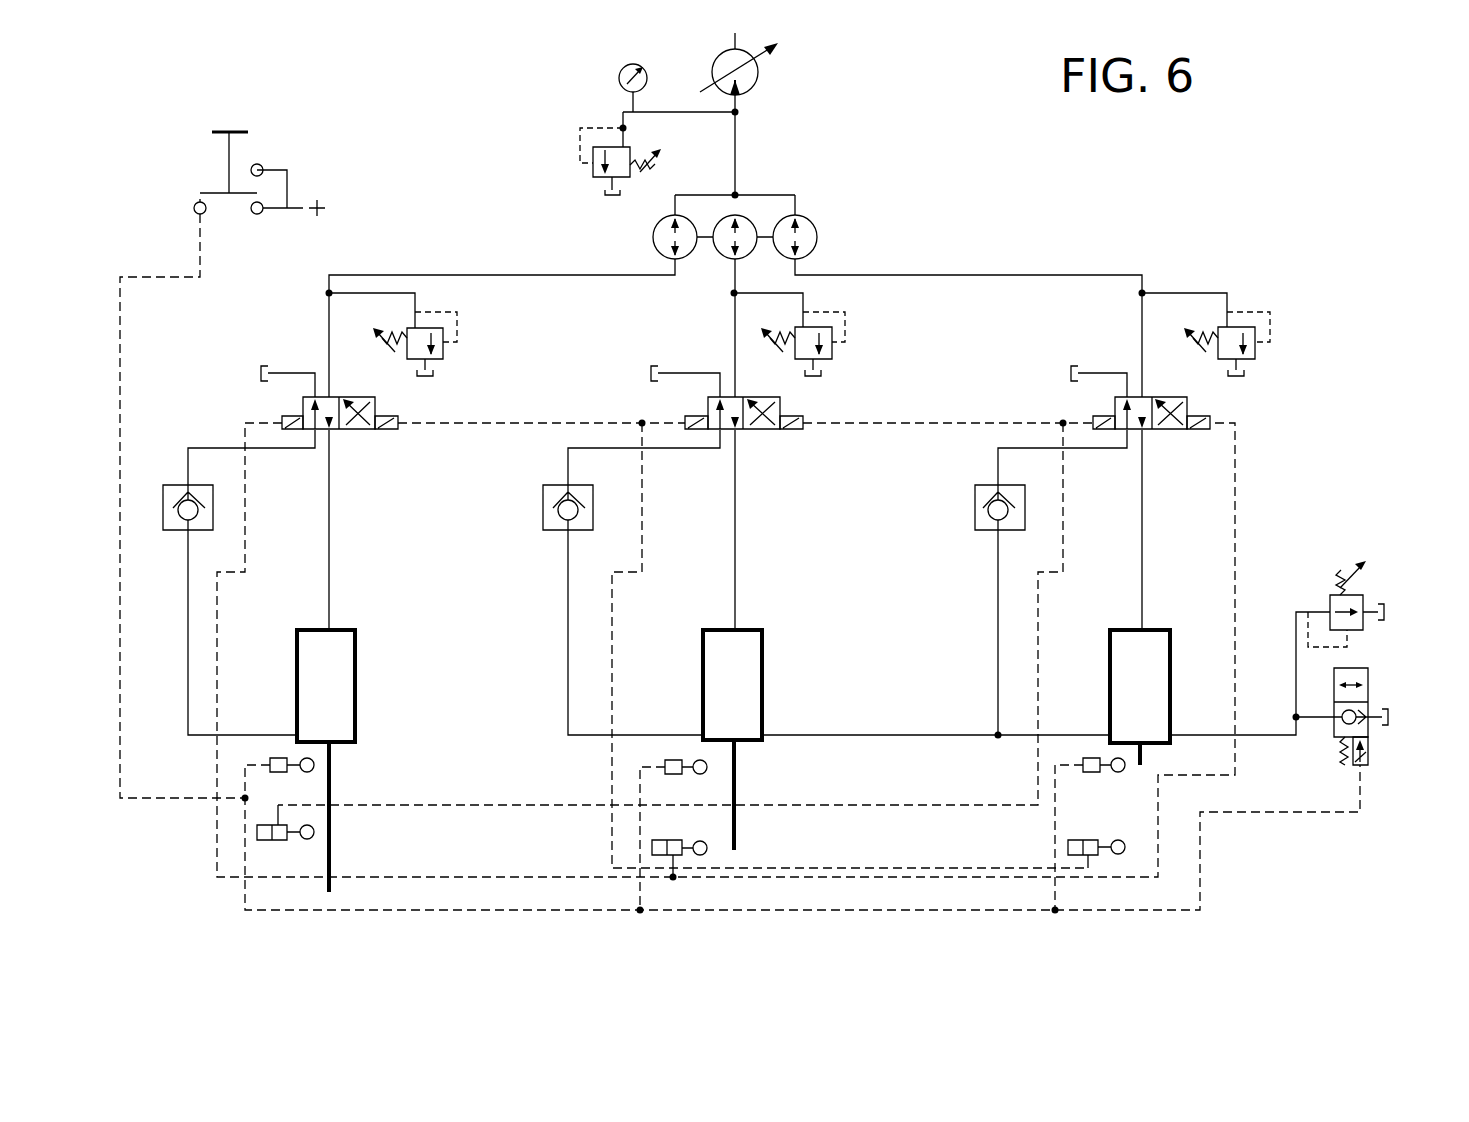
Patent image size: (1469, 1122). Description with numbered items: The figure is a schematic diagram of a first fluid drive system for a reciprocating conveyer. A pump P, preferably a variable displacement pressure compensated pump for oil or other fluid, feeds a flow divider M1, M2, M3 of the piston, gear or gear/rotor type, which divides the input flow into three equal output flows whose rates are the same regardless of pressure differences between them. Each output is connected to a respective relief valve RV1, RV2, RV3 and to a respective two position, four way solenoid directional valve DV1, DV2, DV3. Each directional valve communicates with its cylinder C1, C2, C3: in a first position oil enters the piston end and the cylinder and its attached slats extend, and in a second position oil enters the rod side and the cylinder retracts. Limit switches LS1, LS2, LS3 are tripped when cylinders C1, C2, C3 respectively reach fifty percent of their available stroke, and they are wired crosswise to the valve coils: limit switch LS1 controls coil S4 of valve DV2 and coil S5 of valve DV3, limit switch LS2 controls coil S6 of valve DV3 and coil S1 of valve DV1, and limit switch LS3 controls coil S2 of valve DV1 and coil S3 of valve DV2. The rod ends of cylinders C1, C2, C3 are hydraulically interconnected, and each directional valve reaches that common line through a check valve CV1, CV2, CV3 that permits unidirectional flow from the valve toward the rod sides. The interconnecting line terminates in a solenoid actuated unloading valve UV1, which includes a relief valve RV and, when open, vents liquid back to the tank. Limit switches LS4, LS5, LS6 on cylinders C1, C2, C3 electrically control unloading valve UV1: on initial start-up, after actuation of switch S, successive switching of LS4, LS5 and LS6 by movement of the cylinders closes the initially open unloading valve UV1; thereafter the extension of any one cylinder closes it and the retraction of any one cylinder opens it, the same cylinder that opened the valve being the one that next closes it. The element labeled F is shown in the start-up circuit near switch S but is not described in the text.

The switch S is at (258, 122).
The fuse F is at (188, 209).
The pump P is at (758, 76).
The relief valve RV is at (976, 379).
The flow divider M1 is at (653, 237).
The flow divider M2 is at (738, 215).
The flow divider M3 is at (810, 222).
The relief valve RV1 is at (457, 333).
The relief valve RV2 is at (845, 333).
The relief valve RV3 is at (1270, 333).
The solenoid directional valve DV1 is at (324, 397).
The solenoid directional valve DV2 is at (722, 397).
The solenoid directional valve DV3 is at (1135, 397).
The coil S1 is at (275, 413).
The coil S2 is at (403, 413).
The coil S3 is at (685, 413).
The coil S4 is at (802, 413).
The coil S5 is at (1091, 413).
The coil S6 is at (1208, 413).
The check valve CV1 is at (172, 485).
The check valve CV2 is at (543, 507).
The check valve CV3 is at (975, 506).
The cylinder C1 is at (326, 761).
The cylinder C2 is at (732, 740).
The cylinder C3 is at (1140, 697).
The limit switch LS1 is at (287, 847).
The limit switch LS2 is at (679, 836).
The limit switch LS3 is at (1096, 836).
The limit switch LS4 is at (294, 779).
The limit switch LS5 is at (686, 782).
The limit switch LS6 is at (1106, 780).
The unloading valve UV1 is at (1376, 716).